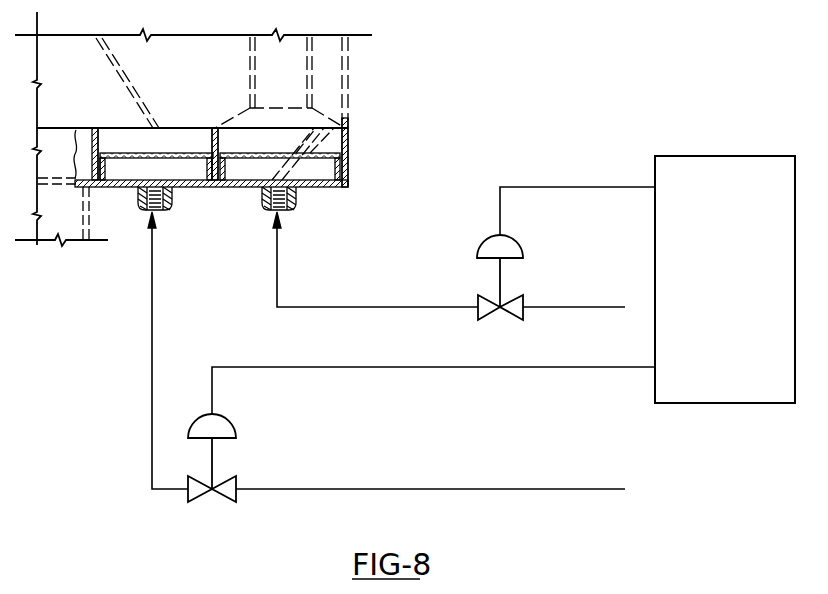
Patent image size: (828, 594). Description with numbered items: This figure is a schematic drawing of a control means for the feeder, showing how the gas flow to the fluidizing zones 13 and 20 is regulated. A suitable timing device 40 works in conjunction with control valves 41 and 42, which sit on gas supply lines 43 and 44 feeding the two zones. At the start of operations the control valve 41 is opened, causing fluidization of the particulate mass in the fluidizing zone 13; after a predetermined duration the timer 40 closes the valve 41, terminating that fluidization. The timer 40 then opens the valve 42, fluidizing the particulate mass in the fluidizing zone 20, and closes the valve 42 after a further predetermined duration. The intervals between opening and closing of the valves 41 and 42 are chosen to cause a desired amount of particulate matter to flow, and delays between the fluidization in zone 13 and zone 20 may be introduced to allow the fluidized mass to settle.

The fluidizing zone 13 is at (292, 150).
The fluidizing zone 20 is at (168, 150).
The timing device 40 is at (735, 293).
The control valve 41 is at (523, 300).
The control valve 42 is at (236, 480).
The gas supply line 43 is at (592, 307).
The gas supply line 44 is at (517, 489).